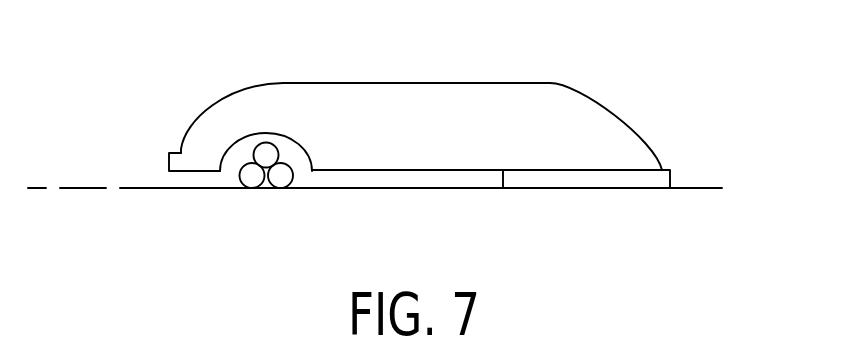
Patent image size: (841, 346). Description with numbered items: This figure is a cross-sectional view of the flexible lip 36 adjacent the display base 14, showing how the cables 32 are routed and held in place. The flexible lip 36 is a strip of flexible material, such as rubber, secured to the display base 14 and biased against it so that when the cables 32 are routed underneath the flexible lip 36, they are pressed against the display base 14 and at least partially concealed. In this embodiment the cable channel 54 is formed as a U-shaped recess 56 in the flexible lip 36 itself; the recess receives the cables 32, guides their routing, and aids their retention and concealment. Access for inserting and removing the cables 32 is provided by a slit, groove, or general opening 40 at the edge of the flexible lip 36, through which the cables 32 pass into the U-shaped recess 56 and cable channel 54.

The display base 14 is at (133, 188).
The opening 40 is at (172, 180).
The cable channel 54 is at (291, 118).
The flexible lip 36 is at (507, 105).
The U-shaped recess 56 is at (297, 143).
The cables 32 is at (300, 175).